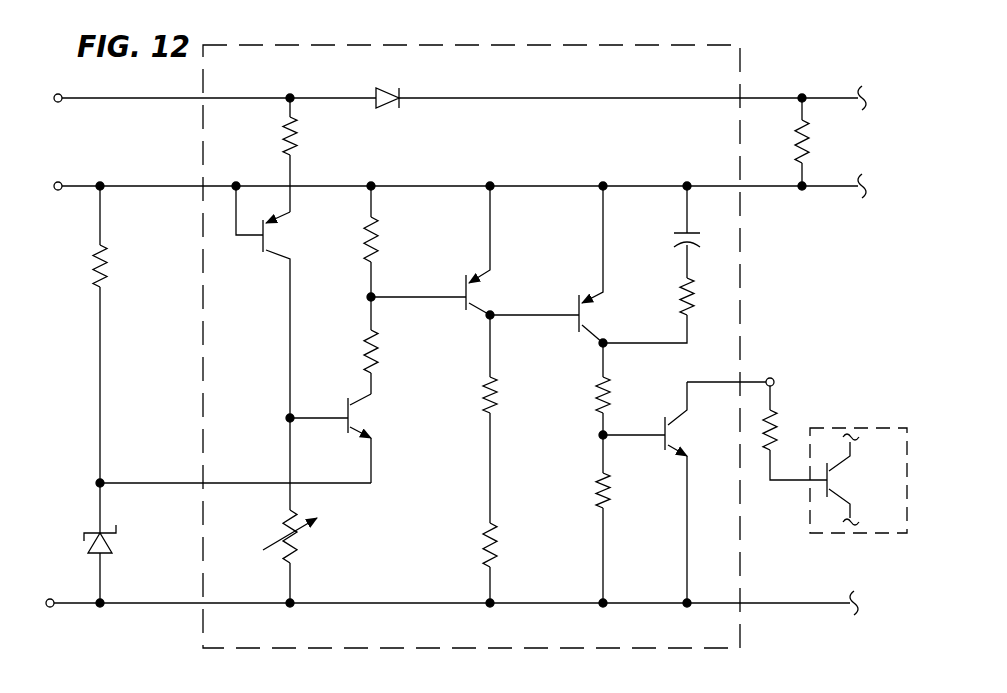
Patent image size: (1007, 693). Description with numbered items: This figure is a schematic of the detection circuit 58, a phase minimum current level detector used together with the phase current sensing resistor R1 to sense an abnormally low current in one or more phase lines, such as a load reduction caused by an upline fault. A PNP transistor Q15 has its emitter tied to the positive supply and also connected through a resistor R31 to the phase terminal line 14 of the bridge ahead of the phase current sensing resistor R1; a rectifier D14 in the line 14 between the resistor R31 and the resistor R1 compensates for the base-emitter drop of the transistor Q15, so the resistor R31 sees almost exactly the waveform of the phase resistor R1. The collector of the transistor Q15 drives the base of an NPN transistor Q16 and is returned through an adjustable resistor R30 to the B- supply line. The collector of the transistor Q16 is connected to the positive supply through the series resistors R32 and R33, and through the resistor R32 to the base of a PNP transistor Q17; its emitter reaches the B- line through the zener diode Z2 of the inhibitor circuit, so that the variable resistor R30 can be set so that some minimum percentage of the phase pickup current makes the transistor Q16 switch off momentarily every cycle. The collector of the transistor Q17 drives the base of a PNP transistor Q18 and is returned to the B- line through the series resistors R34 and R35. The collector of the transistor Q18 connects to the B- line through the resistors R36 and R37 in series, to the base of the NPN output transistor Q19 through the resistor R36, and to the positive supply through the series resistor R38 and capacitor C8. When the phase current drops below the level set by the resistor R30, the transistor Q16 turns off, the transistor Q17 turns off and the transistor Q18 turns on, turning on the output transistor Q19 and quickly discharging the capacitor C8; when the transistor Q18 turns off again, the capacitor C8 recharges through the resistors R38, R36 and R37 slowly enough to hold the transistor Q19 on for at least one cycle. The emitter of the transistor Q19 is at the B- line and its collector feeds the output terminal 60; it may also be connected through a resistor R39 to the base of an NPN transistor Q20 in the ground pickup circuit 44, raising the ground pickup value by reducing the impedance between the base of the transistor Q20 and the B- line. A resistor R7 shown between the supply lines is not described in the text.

The phase terminal line 14 is at (458, 92).
The B− supply line B- is at (451, 598).
The detection circuit 58 is at (739, 323).
The rectifier D14 is at (388, 87).
The phase current sensing resistor R1 is at (815, 142).
The resistor R31 is at (308, 155).
The resistor R7 is at (113, 334).
The zener diode Z2 is at (227, 541).
The PNP transistor Q15 is at (269, 302).
The resistor R33 is at (390, 243).
The resistor R32 is at (390, 345).
The NPN transistor Q16 is at (337, 438).
The adjustable resistor R30 is at (298, 510).
The PNP transistor Q17 is at (438, 252).
The resistor R34 is at (508, 419).
The resistor R35 is at (508, 563).
The PNP transistor Q18 is at (554, 266).
The capacitor C8 is at (700, 232).
The resistor R38 is at (667, 310).
The resistor R36 is at (621, 391).
The resistor R37 is at (621, 519).
The NPN output transistor Q19 is at (653, 492).
The output terminal 60 is at (741, 382).
The resistor R39 is at (795, 433).
The NPN transistor Q20 is at (846, 479).
The ground pickup circuit 44 is at (843, 533).